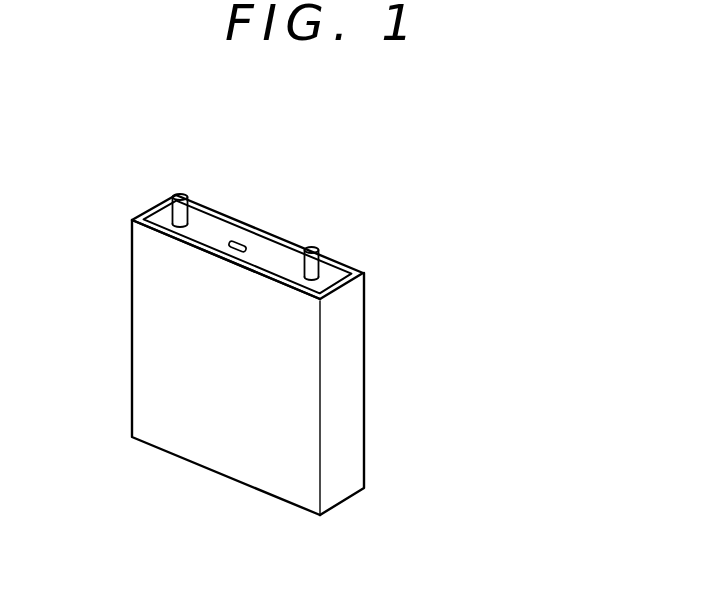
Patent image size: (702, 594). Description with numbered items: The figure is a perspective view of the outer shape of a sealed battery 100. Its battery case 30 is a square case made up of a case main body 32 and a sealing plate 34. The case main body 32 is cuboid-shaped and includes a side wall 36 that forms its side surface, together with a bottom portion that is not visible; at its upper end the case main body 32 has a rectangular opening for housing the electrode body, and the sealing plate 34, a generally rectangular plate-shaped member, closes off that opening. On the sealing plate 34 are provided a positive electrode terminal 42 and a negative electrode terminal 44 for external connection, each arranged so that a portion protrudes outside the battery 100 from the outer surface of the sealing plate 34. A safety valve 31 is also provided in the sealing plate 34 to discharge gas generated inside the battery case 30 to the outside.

The sealed battery 100 is at (468, 162).
The battery case 30 is at (227, 448).
The safety valve 31 is at (237, 241).
The case main body 32 is at (357, 460).
The sealing plate 34 is at (366, 273).
The side wall 36 is at (188, 396).
The positive electrode terminal 42 is at (181, 194).
The negative electrode terminal 44 is at (312, 247).